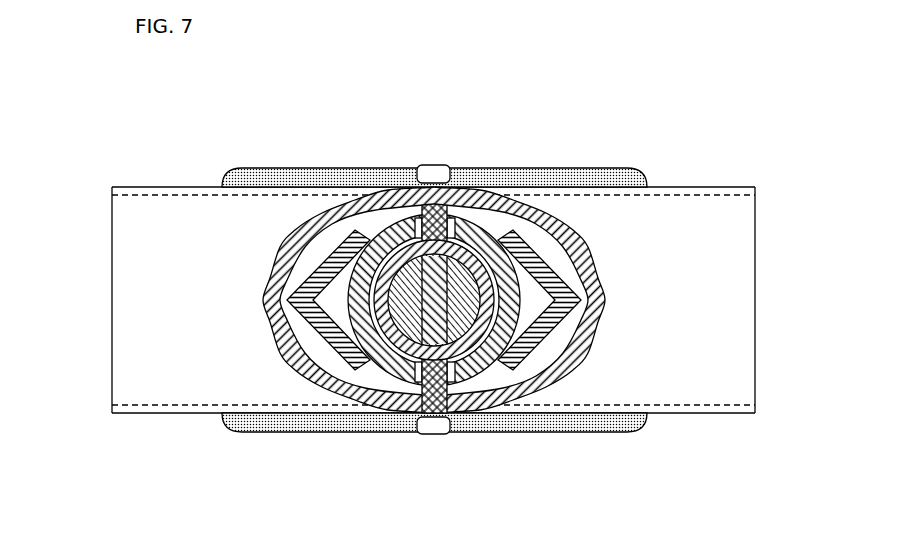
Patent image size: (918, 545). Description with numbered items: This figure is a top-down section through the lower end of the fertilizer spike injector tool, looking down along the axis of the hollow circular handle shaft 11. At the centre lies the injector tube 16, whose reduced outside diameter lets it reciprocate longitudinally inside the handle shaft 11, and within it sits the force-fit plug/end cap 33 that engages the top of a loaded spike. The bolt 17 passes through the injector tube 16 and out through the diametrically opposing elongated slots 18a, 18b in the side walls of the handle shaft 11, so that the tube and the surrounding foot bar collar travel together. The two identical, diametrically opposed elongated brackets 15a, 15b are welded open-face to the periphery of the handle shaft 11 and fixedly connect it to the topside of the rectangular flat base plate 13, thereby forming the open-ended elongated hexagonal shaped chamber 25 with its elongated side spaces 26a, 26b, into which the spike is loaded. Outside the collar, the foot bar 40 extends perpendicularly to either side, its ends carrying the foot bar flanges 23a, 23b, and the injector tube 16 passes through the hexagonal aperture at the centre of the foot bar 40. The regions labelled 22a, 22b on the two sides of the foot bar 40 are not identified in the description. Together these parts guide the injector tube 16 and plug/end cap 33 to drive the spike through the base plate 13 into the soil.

The handle shaft 11 is at (343, 327).
The base plate 13 is at (363, 160).
The elongated bracket 15a is at (333, 207).
The elongated bracket 15b is at (555, 268).
The injector tube 16 is at (381, 339).
The bolt 17 is at (432, 162).
The elongated slot 18a is at (414, 386).
The elongated slot 18b is at (413, 214).
The left chamber 22a is at (133, 288).
The right chamber 22b is at (722, 330).
The foot bar flange 23a is at (109, 191).
The foot bar flange 23b is at (759, 191).
The hexagonal shaped chamber 25 is at (532, 295).
The elongated side space 26a is at (492, 375).
The elongated side space 26b is at (486, 221).
The plug/end cap 33 is at (406, 337).
The foot bar 40 is at (760, 303).